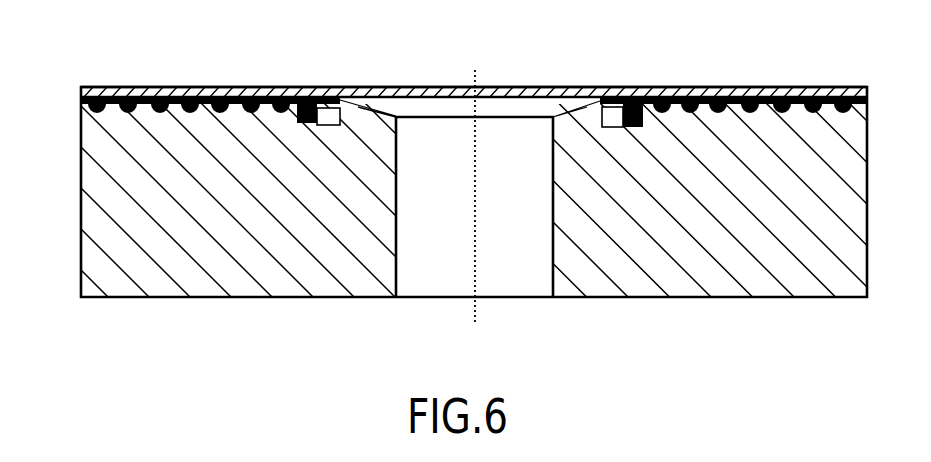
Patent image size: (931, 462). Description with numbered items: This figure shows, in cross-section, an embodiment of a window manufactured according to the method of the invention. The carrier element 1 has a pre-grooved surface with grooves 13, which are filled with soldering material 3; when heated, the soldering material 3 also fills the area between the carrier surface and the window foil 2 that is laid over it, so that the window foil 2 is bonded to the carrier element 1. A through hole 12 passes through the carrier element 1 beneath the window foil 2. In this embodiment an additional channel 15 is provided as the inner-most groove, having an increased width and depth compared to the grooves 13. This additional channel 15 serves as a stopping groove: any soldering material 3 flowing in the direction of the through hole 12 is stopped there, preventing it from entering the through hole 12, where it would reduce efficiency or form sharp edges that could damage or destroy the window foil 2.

The carrier element 1 is at (112, 199).
The window foil 2 is at (81, 93).
The soldering material 3 is at (82, 103).
The through hole 12 is at (512, 140).
The grooves 13 is at (101, 113).
The additional channel 15 is at (328, 93).